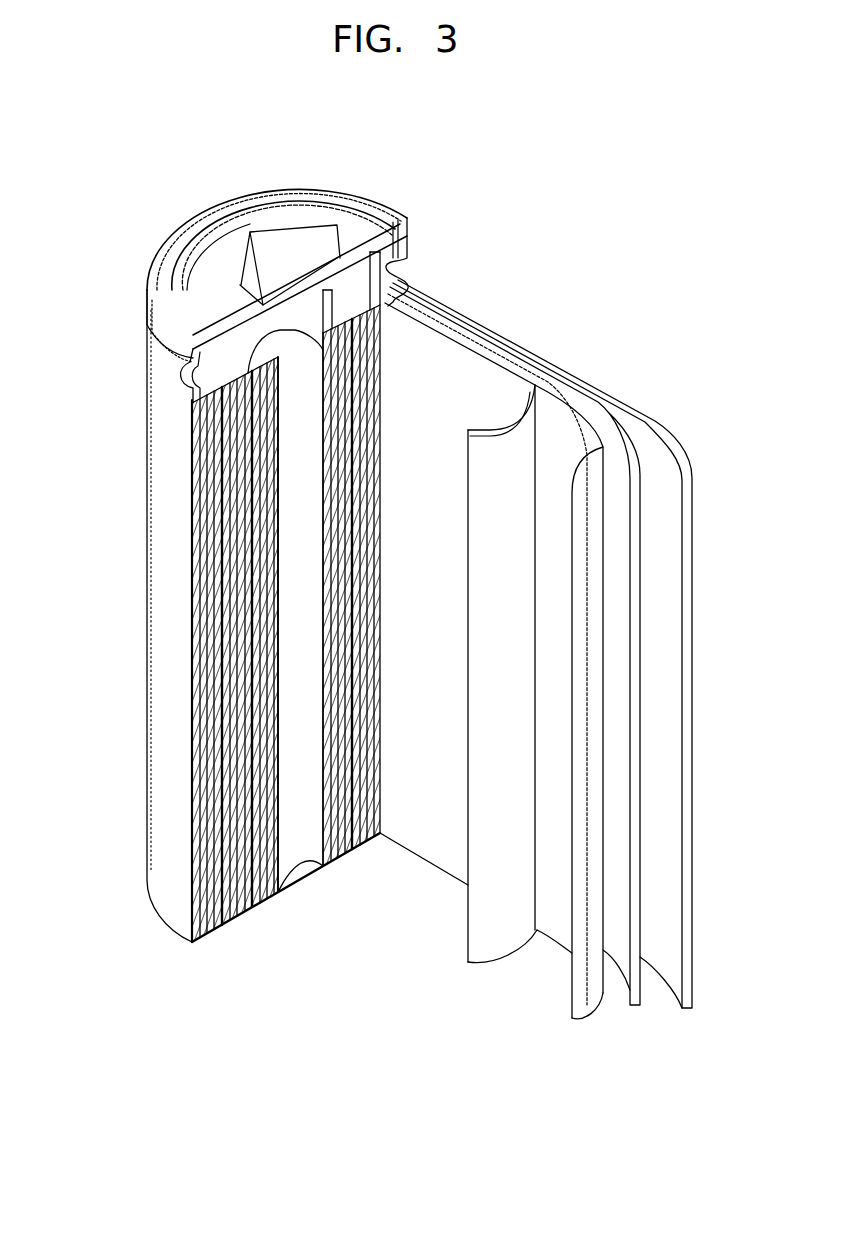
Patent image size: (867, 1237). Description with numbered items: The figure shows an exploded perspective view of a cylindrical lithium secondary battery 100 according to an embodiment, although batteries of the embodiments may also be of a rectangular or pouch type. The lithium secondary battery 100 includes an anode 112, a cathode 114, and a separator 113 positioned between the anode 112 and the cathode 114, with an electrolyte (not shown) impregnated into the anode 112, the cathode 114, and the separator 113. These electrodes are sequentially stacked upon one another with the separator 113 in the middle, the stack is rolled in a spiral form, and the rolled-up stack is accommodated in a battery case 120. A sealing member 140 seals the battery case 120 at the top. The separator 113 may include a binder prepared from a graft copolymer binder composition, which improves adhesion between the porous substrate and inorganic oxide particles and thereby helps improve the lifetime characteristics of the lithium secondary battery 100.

The lithium secondary battery 100 is at (422, 136).
The anode 112 is at (677, 453).
The separator 113 is at (497, 363).
The cathode 114 is at (562, 410).
The battery case 120 is at (160, 612).
The sealing member 140 is at (270, 232).